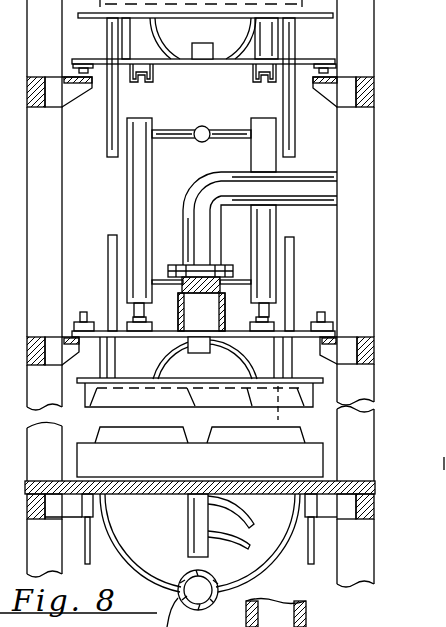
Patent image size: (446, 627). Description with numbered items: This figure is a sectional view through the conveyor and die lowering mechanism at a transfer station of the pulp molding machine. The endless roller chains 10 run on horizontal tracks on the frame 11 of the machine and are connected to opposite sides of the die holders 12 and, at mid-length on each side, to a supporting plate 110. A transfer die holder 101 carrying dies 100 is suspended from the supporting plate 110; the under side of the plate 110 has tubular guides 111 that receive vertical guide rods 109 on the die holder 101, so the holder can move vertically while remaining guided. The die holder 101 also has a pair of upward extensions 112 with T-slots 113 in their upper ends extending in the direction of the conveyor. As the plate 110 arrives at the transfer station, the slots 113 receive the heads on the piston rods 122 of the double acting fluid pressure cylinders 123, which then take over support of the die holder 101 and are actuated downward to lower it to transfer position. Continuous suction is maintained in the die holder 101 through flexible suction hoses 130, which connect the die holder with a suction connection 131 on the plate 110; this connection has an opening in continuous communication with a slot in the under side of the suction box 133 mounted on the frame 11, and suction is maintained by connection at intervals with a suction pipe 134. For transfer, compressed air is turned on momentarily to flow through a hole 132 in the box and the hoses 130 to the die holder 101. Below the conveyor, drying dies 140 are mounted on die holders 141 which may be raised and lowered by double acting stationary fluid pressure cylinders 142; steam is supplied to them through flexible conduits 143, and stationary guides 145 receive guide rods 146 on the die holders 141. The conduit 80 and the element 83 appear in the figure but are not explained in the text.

The endless roller chains 10 is at (72, 69).
The frame 11 is at (375, 157).
The die holders 12 is at (253, 78).
The conduit 80 is at (246, 622).
The conduit 83 is at (397, 624).
The dies 100 is at (283, 418).
The die holder 101 is at (323, 16).
The vertical guide rods 109 is at (107, 118).
The supporting plate 110 is at (306, 59).
The tubular guides 111 is at (107, 40).
The upward extensions 112 is at (264, 365).
The T-slots 113 is at (141, 83).
The piston rods 122 is at (256, 316).
The double acting fluid pressure cylinders 123 is at (251, 158).
The flexible suction hoses 130 is at (232, 364).
The suction connection 131 is at (158, 345).
The hole 132 is at (201, 328).
The suction box 133 is at (172, 318).
The suction pipe 134 is at (312, 172).
The drying dies 140 is at (306, 436).
The die holders 141 is at (323, 463).
The double acting stationary fluid pressure cylinders 142 is at (188, 535).
The flexible conduits 143 is at (276, 556).
The stationary guides 145 is at (318, 505).
The guide rods 146 is at (315, 556).